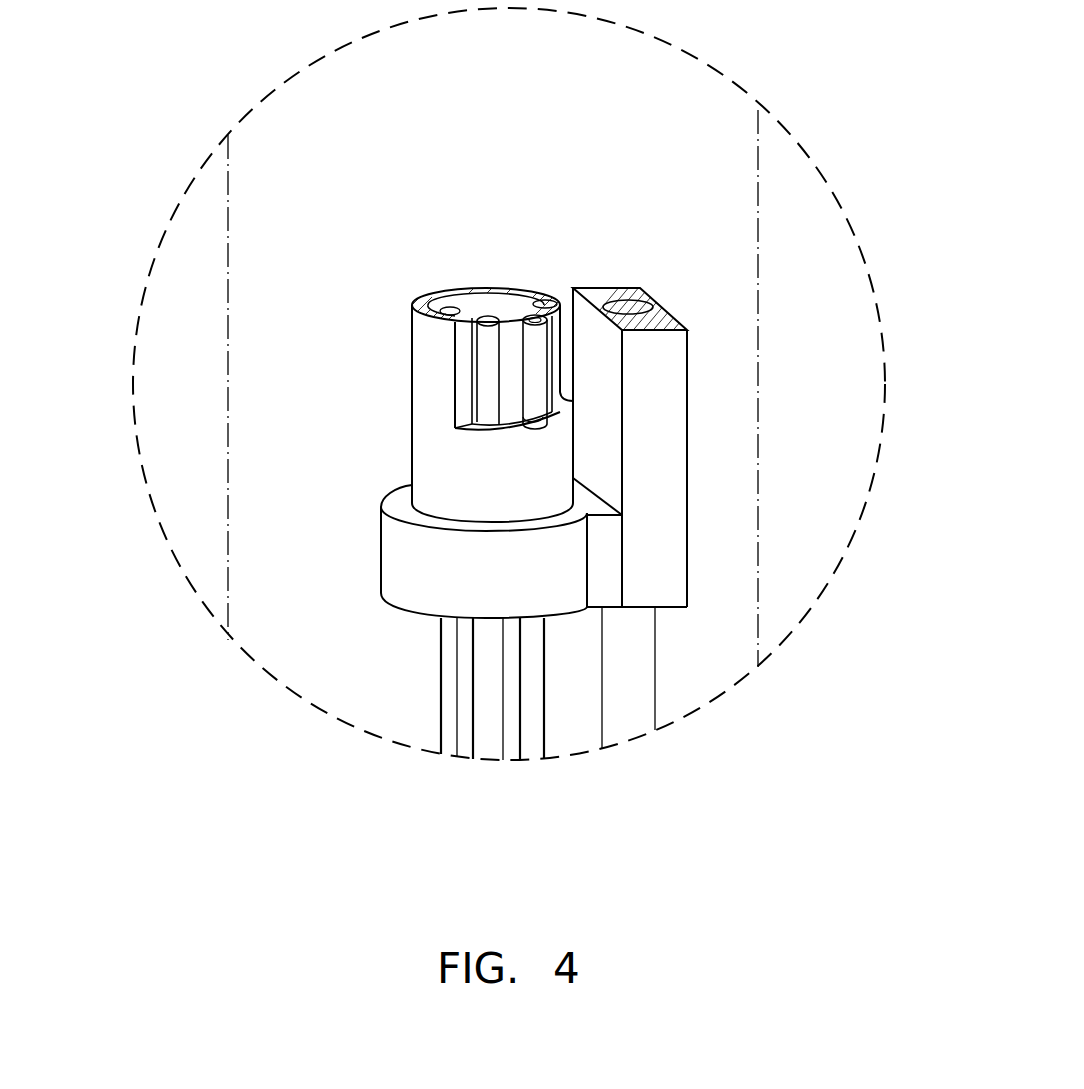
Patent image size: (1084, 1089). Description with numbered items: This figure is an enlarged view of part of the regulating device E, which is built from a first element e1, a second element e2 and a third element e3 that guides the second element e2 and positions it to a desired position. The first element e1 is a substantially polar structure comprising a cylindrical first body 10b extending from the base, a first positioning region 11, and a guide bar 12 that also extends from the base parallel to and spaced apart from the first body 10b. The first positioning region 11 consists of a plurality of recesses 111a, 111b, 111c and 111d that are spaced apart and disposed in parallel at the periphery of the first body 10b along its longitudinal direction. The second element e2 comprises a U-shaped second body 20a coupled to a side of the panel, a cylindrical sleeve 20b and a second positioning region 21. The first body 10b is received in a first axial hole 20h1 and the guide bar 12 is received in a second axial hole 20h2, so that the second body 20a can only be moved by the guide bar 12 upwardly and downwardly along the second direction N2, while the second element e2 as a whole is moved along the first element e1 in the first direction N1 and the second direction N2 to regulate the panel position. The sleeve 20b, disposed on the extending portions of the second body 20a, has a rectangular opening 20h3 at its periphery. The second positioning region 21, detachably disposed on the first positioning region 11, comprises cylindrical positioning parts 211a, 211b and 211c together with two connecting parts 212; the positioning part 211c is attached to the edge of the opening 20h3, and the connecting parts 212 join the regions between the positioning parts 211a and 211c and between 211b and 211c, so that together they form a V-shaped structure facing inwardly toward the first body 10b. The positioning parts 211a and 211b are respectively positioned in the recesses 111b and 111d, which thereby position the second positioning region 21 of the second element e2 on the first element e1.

The regulating device E is at (118, 75).
The first element e1 is at (455, 290).
The second element e2 is at (403, 447).
The third element e3 is at (222, 250).
The first body 10b is at (485, 678).
The first positioning region 11 is at (683, 99).
The recess 111a is at (456, 288).
The recess 111b is at (463, 291).
The recess 111c is at (500, 292).
The recess 111d is at (520, 292).
The guide bar 12 is at (640, 290).
The second body 20a is at (657, 442).
The cylindrical sleeve 20b is at (577, 395).
The first axial hole 20h1 is at (482, 291).
The second axial hole 20h2 is at (657, 303).
The rectangular opening 20h3 is at (566, 404).
The second positioning region 21 is at (778, 163).
The cylindrical positioning part 211a is at (528, 352).
The cylindrical positioning part 211b is at (553, 294).
The cylindrical positioning part 211c is at (545, 294).
The connecting part 212 is at (548, 370).
The first direction N1 is at (405, 559).
The second direction N2 is at (700, 648).